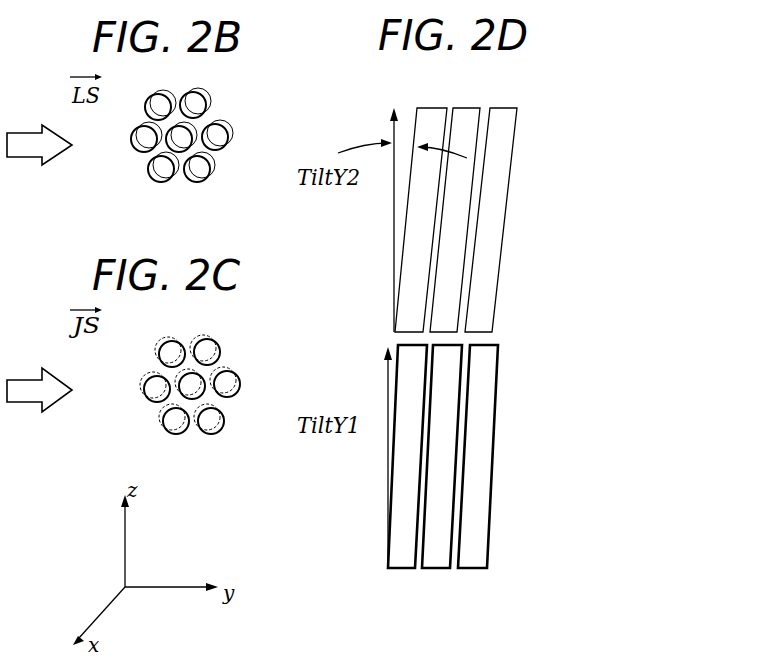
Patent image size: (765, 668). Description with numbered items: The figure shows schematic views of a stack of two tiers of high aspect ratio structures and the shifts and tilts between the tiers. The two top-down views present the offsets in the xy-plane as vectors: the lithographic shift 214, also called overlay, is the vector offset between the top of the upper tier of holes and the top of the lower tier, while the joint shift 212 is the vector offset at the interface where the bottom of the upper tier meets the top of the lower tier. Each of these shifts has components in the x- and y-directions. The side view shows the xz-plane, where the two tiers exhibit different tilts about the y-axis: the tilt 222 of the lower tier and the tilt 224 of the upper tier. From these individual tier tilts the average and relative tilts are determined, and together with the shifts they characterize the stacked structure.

In FIG. 2C, the joint shift 212 is at (126, 351).
In FIG. 2B, the lithographic shift 214 is at (125, 100).
In FIG. 2D, the tilt of first tier 222 is at (397, 365).
In FIG. 2D, the tilt of second tier 224 is at (394, 128).